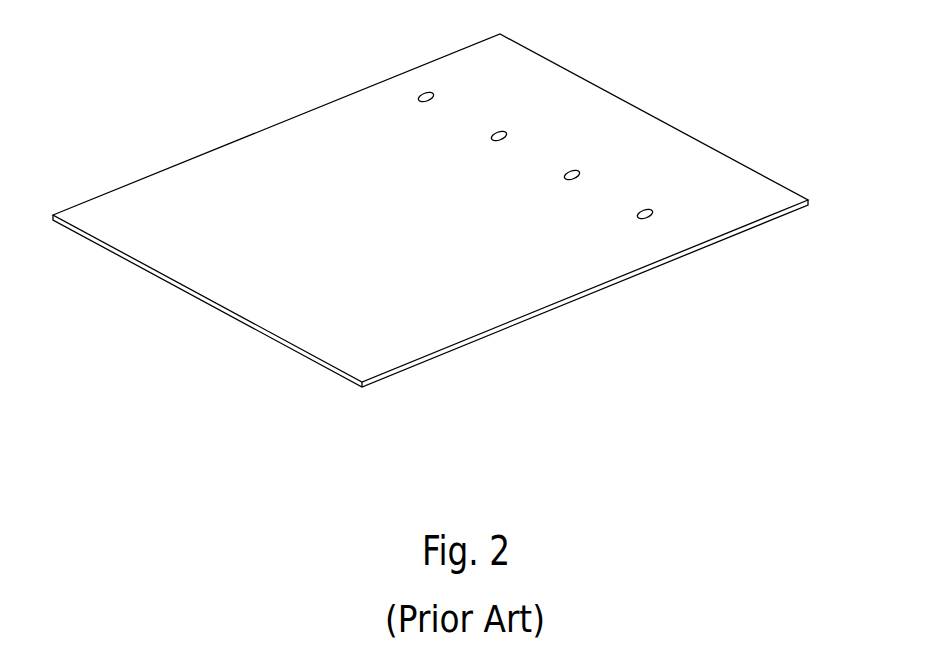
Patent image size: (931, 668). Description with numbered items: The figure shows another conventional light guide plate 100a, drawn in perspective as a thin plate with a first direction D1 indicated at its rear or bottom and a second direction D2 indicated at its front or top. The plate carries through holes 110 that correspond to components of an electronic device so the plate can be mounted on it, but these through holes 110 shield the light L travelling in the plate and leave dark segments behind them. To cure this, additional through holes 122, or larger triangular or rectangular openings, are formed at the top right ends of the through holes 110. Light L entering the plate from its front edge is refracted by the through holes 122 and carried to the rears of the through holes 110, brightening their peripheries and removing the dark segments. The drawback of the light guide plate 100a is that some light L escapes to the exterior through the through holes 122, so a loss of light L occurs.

The light guide plate 100a is at (802, 428).
The through holes 110 is at (418, 95).
The through holes 122 is at (432, 82).
The light L is at (95, 242).
The first direction D1 is at (812, 132).
The second direction D2 is at (812, 235).